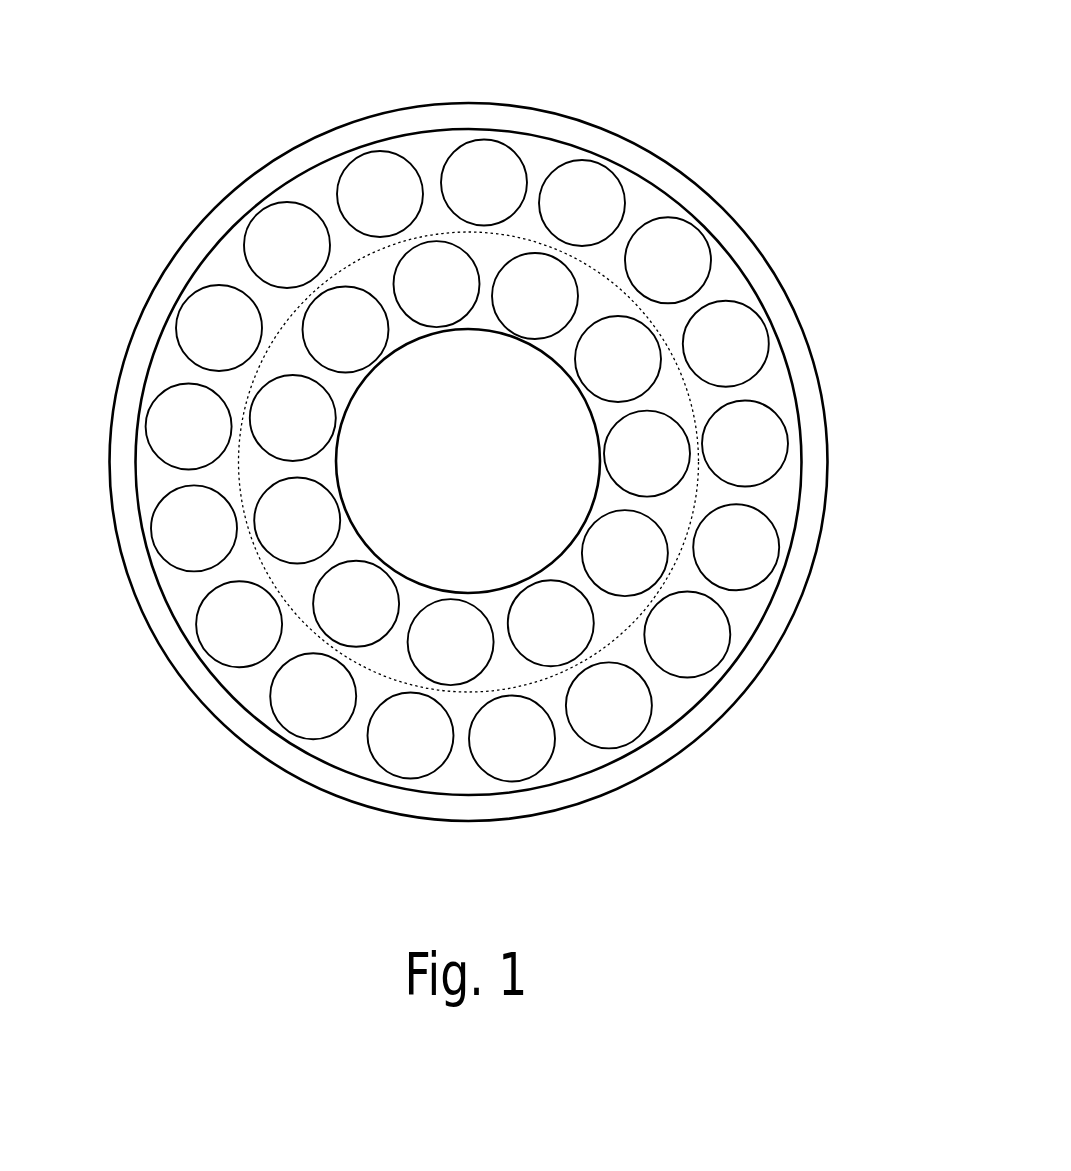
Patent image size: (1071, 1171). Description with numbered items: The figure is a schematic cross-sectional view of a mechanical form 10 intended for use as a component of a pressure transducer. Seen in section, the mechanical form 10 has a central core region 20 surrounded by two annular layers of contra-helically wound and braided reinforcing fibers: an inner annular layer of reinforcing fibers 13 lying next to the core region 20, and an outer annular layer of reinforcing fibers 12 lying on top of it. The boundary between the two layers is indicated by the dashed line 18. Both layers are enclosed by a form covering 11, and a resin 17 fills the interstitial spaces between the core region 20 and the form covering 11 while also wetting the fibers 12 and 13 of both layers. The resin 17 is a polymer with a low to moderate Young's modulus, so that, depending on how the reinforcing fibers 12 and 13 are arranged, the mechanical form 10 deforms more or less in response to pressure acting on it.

The mechanical form 10 is at (635, 90).
The form covering 11 is at (232, 210).
The outer annular layer of contra-helically wound and braided reinforcing fibers 12 is at (652, 277).
The inner annular layer of contra-helically wound and braided reinforcing fibers 13 is at (274, 431).
The resin 17 is at (168, 353).
The dashed line 18 is at (445, 230).
The core region 20 is at (515, 501).